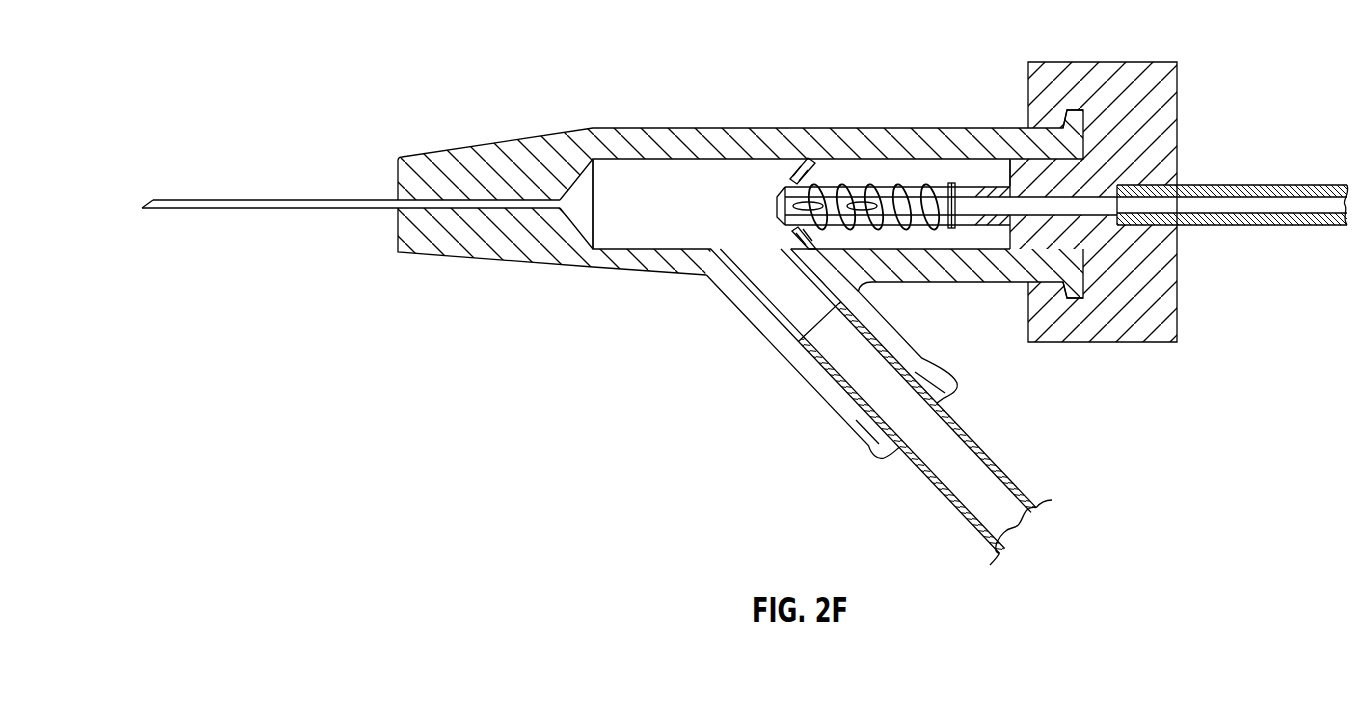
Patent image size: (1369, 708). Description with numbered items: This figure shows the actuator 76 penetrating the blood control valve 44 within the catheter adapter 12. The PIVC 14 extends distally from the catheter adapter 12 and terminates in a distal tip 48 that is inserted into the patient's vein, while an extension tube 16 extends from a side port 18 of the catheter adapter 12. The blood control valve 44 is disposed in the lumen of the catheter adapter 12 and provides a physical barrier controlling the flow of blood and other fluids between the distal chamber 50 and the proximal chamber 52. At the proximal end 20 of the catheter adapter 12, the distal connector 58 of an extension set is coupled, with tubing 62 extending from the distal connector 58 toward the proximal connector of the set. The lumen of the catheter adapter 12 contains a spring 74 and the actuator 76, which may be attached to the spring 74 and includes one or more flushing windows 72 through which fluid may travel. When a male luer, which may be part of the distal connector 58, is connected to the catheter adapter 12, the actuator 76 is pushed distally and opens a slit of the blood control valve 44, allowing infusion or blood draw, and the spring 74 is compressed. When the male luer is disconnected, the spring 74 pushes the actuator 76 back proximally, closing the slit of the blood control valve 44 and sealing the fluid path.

The catheter adapter 12 is at (717, 135).
The PIVC 14 is at (185, 198).
The extension tube 16 is at (985, 447).
The side port 18 is at (862, 455).
The proximal end 20 is at (1070, 137).
The blood control valve 44 is at (802, 227).
The distal tip 48 is at (150, 209).
The distal chamber 50 is at (670, 217).
The proximal chamber 52 is at (970, 172).
The distal connector 58 is at (1172, 119).
The tubing 62 is at (1310, 185).
The flushing windows 72 is at (808, 205).
The spring 74 is at (930, 185).
The actuator 76 is at (882, 190).